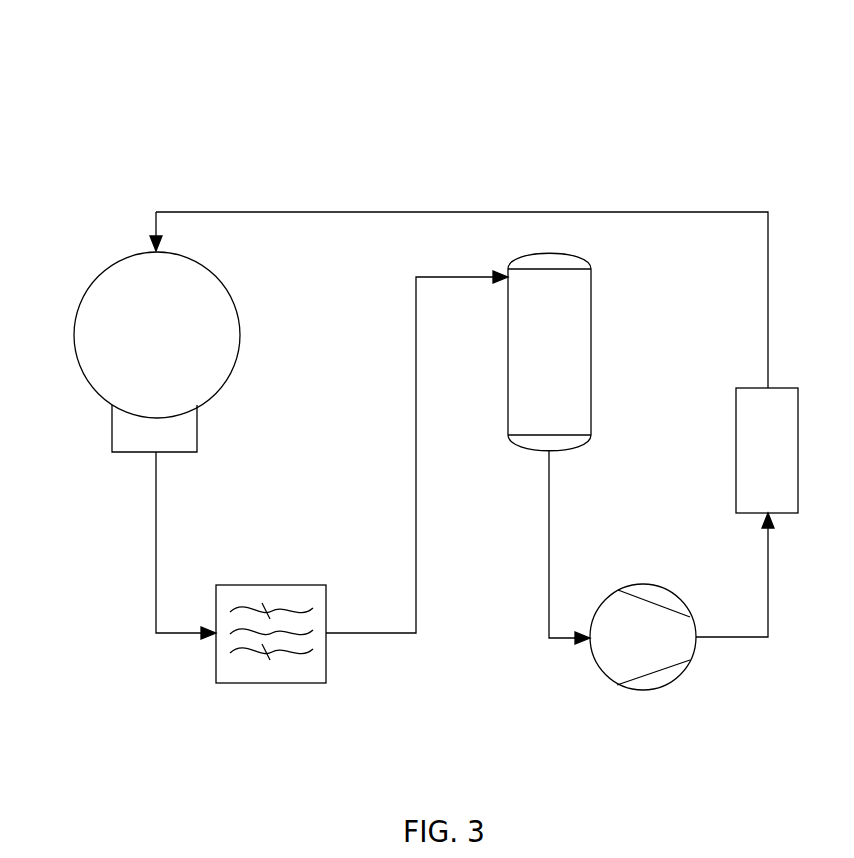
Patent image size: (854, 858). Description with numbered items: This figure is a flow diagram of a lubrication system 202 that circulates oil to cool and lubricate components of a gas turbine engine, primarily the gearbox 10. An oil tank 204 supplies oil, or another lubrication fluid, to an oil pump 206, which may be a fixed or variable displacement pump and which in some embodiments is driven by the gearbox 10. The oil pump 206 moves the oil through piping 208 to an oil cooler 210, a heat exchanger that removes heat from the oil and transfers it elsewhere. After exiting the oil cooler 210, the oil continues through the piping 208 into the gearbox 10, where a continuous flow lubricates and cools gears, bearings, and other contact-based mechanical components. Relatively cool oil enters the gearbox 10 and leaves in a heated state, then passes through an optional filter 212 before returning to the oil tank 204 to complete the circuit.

The lubrication system 202 is at (460, 128).
The piping 208 is at (634, 212).
The gearbox 10 is at (167, 349).
The filter 212 is at (270, 667).
The oil tank 204 is at (573, 360).
The oil pump 206 is at (656, 648).
The oil cooler 210 is at (788, 462).